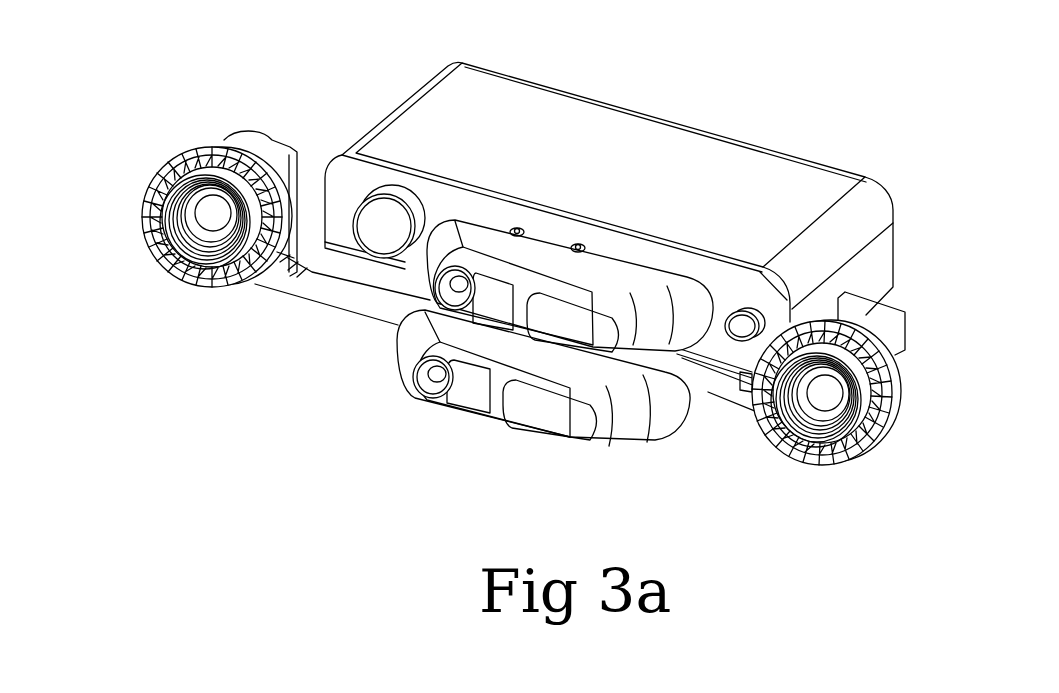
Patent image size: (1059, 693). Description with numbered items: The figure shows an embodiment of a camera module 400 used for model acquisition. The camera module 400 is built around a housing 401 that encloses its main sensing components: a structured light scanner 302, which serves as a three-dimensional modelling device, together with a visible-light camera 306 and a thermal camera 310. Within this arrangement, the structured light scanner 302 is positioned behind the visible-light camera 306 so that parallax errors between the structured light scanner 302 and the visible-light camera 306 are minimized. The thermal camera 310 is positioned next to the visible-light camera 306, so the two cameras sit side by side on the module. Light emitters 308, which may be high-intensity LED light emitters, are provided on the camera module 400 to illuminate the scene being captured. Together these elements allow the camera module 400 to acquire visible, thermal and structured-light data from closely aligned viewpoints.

The camera module 400 is at (517, 250).
The structured light scanner 302 is at (609, 176).
The housing 401 is at (722, 151).
The visible-light camera 306 is at (410, 259).
The light emitters 308 is at (143, 167).
The thermal camera 310 is at (412, 393).